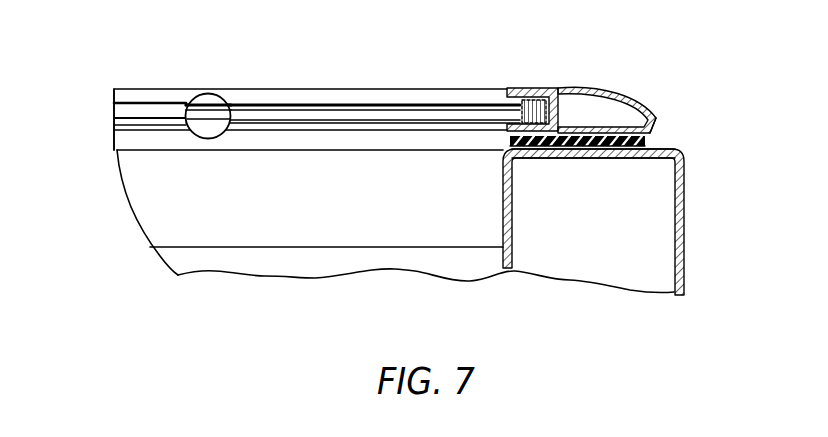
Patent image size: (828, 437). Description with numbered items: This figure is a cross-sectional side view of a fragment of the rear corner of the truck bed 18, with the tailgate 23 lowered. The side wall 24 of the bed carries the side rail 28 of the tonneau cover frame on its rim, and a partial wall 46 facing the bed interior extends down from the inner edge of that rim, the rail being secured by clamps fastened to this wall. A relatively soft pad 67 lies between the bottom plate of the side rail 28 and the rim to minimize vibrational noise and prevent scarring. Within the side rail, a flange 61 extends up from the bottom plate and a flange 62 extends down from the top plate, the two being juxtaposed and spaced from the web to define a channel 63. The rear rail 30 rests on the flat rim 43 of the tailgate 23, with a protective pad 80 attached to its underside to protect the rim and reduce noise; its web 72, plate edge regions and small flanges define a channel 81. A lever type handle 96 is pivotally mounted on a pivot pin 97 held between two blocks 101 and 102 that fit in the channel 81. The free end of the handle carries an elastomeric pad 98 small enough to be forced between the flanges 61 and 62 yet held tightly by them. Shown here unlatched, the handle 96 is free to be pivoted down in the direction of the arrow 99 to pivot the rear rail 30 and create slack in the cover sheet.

The bed 18 is at (217, 285).
The tailgate 23 is at (690, 232).
The side wall 24 is at (160, 268).
The side rail 28 is at (150, 89).
The rear rail 30 is at (655, 115).
The rim 43 is at (682, 143).
The partial wall 46 is at (412, 233).
The flange 61 is at (112, 122).
The flange 62 is at (118, 109).
The channel 63 is at (118, 116).
The soft pad 67 is at (323, 142).
The web 72 is at (600, 96).
The protective pad 80 is at (645, 136).
The channel 81 is at (572, 88).
The handle 96 is at (313, 104).
The pivot pin 97 is at (494, 97).
The elastomeric pad 98 is at (216, 94).
The arrow 99 is at (207, 145).
The block 101 is at (545, 88).
The block 102 is at (548, 158).